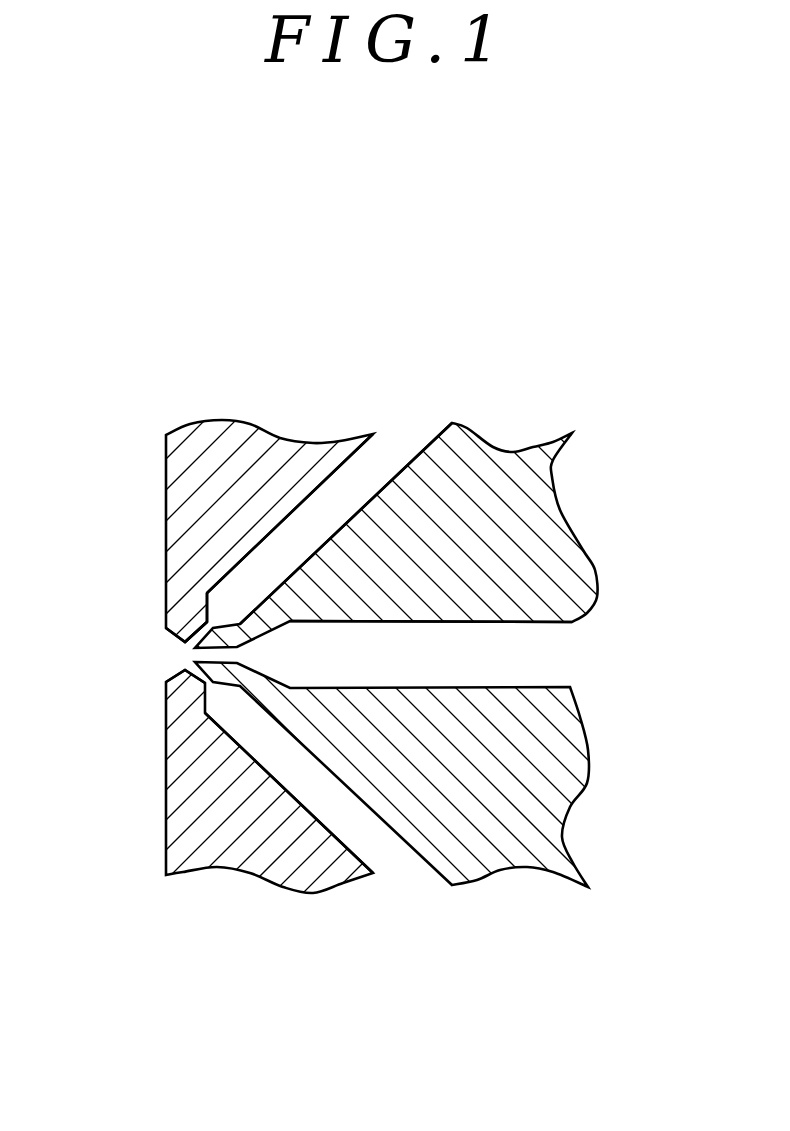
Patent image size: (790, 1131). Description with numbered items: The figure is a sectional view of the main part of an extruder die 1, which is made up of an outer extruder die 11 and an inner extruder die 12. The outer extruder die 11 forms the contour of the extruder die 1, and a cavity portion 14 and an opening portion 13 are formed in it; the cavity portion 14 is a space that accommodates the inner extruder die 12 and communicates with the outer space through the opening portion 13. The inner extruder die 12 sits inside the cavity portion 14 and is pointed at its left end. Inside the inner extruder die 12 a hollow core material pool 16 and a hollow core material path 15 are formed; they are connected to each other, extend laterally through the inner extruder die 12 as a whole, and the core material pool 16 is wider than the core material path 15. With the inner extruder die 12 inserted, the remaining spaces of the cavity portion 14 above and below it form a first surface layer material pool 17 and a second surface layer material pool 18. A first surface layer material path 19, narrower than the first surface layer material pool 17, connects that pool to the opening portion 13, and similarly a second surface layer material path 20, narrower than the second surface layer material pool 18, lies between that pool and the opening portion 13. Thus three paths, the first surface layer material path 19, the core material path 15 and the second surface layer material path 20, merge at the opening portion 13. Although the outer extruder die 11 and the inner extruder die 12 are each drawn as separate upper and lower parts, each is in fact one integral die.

The extruder die 1 is at (525, 388).
The outer extruder die 11 is at (177, 499).
The inner extruder die 12 is at (542, 523).
The opening portion 13 is at (140, 665).
The cavity portion 14 is at (270, 543).
The core material path 15 is at (210, 655).
The core material pool 16 is at (512, 648).
The first surface layer material pool 17 is at (335, 487).
The second surface layer material pool 18 is at (337, 822).
The first surface layer material path 19 is at (193, 637).
The second surface layer material path 20 is at (190, 683).